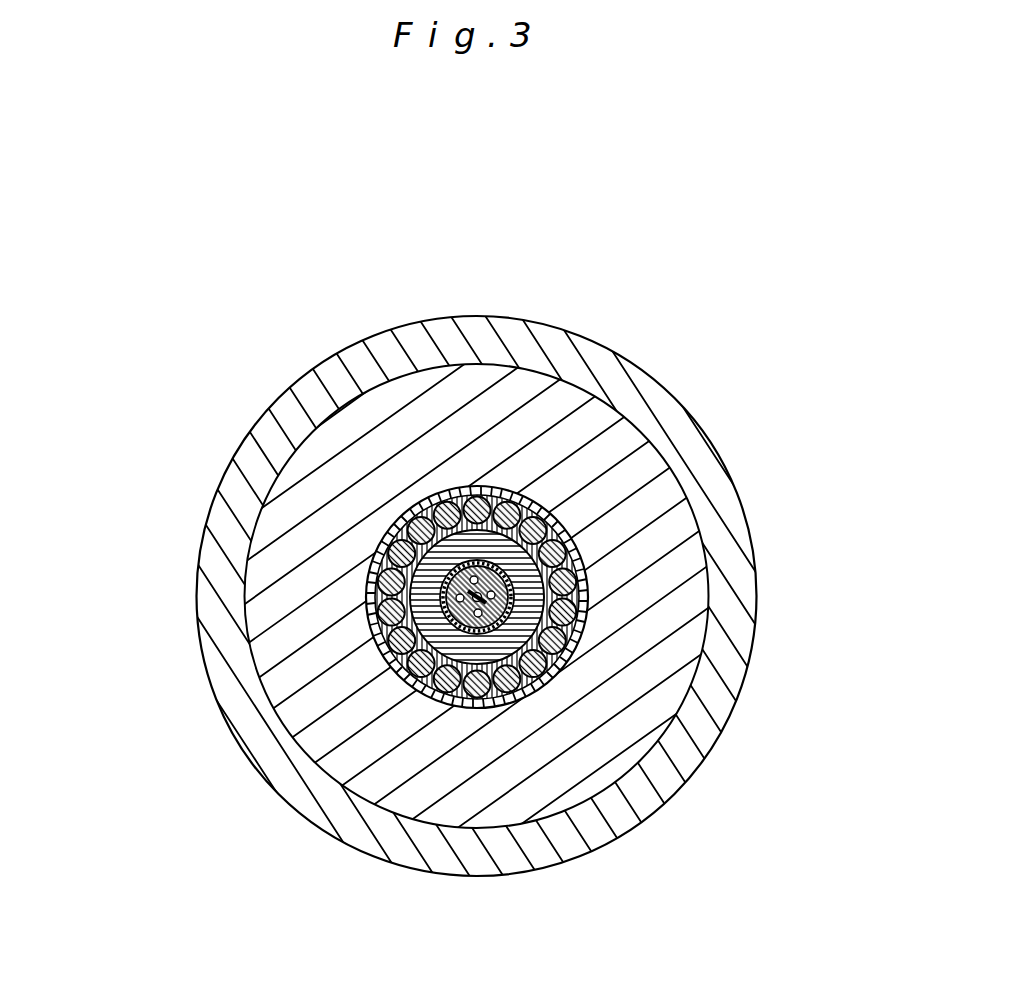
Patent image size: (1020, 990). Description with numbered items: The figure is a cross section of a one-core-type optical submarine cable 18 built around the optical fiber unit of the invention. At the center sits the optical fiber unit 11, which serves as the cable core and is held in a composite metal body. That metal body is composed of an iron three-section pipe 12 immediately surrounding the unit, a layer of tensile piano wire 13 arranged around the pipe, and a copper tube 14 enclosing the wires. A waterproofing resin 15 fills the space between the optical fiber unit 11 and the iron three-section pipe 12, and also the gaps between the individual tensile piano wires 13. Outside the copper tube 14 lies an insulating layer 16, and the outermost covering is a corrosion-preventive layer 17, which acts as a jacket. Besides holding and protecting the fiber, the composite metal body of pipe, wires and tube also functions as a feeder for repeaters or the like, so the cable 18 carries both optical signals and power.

The optical fiber unit 11 is at (505, 525).
The iron three-section pipe 12 is at (548, 535).
The tensile piano wire 13 is at (583, 622).
The copper tube 14 is at (573, 657).
The waterproofing resin 15 is at (583, 597).
The insulating layer 16 is at (600, 753).
The corrosion-preventive layer 17 is at (630, 809).
The optical submarine cable 18 is at (245, 425).